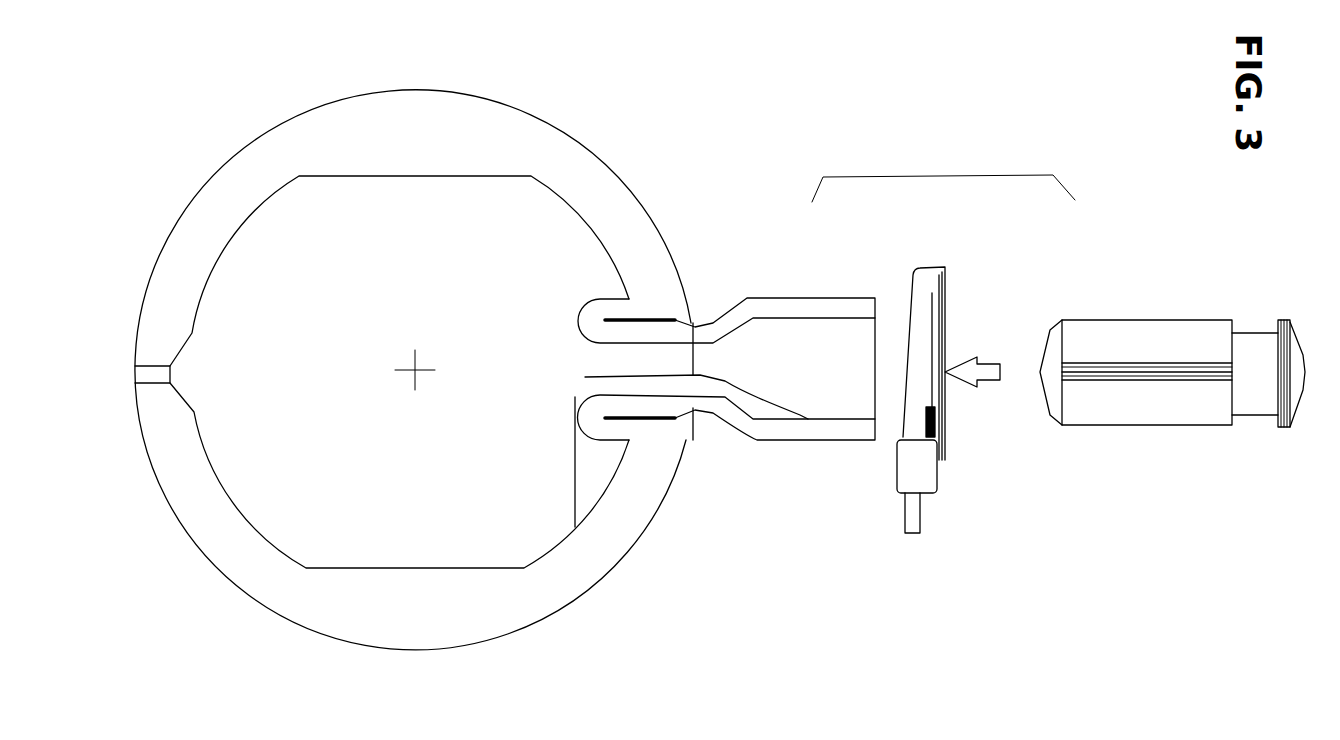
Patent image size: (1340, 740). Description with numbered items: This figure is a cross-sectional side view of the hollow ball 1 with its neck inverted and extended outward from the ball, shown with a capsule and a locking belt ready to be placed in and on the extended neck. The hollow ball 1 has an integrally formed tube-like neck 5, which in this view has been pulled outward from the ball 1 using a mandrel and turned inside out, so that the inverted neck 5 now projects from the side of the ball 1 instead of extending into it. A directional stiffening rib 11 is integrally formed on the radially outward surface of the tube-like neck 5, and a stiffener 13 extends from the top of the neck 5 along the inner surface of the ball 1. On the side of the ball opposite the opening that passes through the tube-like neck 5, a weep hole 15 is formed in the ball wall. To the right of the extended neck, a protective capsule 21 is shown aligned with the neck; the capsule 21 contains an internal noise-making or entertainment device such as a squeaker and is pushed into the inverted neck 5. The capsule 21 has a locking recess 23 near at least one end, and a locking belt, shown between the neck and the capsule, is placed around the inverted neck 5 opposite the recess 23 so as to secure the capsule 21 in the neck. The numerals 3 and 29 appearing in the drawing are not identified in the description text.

The hollow ball 1 is at (638, 572).
The clip 3 is at (947, 400).
The tube-like neck 5 is at (778, 468).
The directional stiffening rib 11 is at (590, 377).
The stiffener 13 is at (575, 477).
The weep hole 15 is at (171, 370).
The protective capsule 21 is at (1095, 425).
The locking recess 23 is at (1263, 416).
The clip base 29 is at (937, 504).